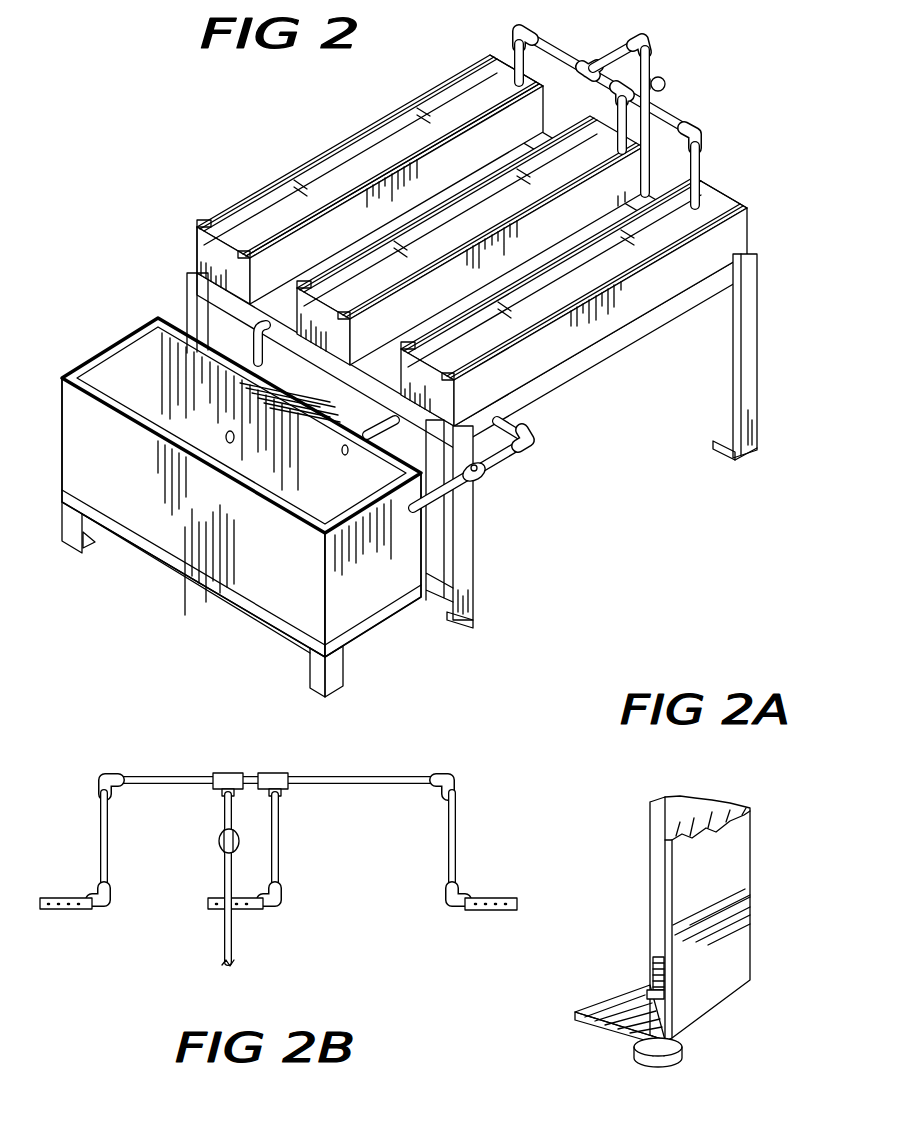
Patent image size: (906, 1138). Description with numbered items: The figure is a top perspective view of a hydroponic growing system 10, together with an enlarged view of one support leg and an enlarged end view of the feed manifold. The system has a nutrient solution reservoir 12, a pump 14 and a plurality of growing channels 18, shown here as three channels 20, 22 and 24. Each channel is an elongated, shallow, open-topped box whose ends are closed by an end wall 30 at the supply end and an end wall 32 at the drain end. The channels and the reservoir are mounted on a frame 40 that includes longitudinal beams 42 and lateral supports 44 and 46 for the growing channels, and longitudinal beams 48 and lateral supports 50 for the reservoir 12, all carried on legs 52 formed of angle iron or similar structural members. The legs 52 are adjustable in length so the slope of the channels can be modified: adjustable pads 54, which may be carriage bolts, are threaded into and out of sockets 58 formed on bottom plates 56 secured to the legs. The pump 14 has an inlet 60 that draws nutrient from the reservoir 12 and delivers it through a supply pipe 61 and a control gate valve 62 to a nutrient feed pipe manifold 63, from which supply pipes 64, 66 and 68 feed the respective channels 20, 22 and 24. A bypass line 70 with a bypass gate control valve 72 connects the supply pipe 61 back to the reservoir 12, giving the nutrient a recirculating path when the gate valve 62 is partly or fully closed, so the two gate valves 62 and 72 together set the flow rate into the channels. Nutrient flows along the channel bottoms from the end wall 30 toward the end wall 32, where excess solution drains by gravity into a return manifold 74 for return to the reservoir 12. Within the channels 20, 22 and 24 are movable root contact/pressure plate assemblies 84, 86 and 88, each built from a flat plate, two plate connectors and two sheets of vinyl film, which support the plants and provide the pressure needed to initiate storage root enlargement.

In FIG. 2, the hydroponic growing system 10 is at (763, 115).
In FIG. 2, the nutrient solution reservoir 12 is at (242, 495).
In FIG. 2, the pump 14 is at (343, 407).
In FIG. 2, the growing channels 18 is at (372, 124).
In FIG. 2, the growing channel 20 is at (463, 75).
In FIG. 2, the growing channel 22 is at (343, 262).
In FIG. 2, the growing channel 24 is at (625, 312).
In FIG. 2, the end wall 30 is at (497, 72).
In FIG. 2, the end wall 32 is at (197, 252).
In FIG. 2, the frame 40 is at (472, 274).
In FIG. 2, the longitudinal beams 42 is at (683, 293).
In FIG. 2, the lateral support 44 is at (383, 373).
In FIG. 2, the lateral support 46 is at (630, 196).
In FIG. 2, the longitudinal beams 48 is at (388, 630).
In FIG. 2, the lateral supports 50 is at (210, 604).
In FIG. 2, the legs 52 is at (463, 150).
In FIG. 2A, the legs 52 is at (742, 944).
In FIG. 2, the adjustable pads 54 is at (90, 547).
In FIG. 2A, the adjustable pads 54 is at (683, 1050).
In FIG. 2, the bottom plates 56 is at (738, 445).
In FIG. 2A, the bottom plates 56 is at (598, 1012).
In FIG. 2A, the sockets 58 is at (646, 988).
In FIG. 2, the inlet 60 is at (231, 445).
In FIG. 2, the supply pipe 61 is at (653, 112).
In FIG. 2B, the supply pipe 61 is at (235, 942).
In FIG. 2, the control gate valve 62 is at (665, 80).
In FIG. 2B, the control gate valve 62 is at (218, 841).
In FIG. 2, the nutrient feed pipe manifold 63 is at (577, 50).
In FIG. 2B, the nutrient feed pipe manifold 63 is at (376, 770).
In FIG. 2, the supply pipe 64 is at (517, 30).
In FIG. 2B, the supply pipe 64 is at (100, 845).
In FIG. 2, the supply pipe 66 is at (613, 112).
In FIG. 2B, the supply pipe 66 is at (283, 846).
In FIG. 2, the supply pipe 68 is at (704, 165).
In FIG. 2B, the supply pipe 68 is at (457, 830).
In FIG. 2, the bypass line 70 is at (494, 481).
In FIG. 2, the bypass gate control valve 72 is at (482, 480).
In FIG. 2, the return manifold 74 is at (521, 453).
In FIG. 2, the root contact/pressure plate assembly 84 is at (323, 195).
In FIG. 2, the root contact/pressure plate assembly 86 is at (410, 258).
In FIG. 2, the root contact/pressure plate assembly 88 is at (580, 280).